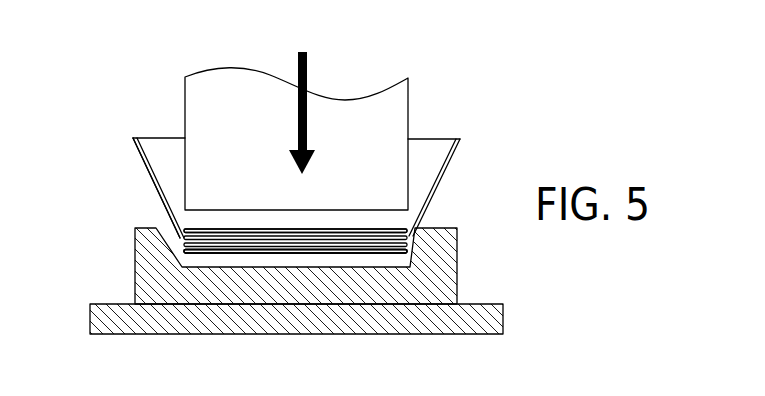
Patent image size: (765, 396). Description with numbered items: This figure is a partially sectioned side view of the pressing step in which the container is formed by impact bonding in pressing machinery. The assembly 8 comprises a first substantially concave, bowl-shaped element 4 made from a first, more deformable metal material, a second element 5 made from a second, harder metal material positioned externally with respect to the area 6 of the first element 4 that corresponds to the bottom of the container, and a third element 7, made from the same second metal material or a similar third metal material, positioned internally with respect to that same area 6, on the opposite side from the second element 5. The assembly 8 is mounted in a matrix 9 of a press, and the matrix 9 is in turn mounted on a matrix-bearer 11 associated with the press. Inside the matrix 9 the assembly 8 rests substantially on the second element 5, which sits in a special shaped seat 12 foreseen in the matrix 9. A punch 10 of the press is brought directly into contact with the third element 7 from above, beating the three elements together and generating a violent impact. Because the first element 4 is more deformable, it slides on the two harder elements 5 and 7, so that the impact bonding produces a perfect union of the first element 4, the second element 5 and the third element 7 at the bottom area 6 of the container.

The first element 4 is at (145, 164).
The second element 5 is at (234, 256).
The area 6 is at (405, 239).
The third element 7 is at (246, 229).
The assembly 8 is at (137, 188).
The matrix 9 is at (135, 267).
The punch 10 is at (382, 123).
The matrix-bearer 11 is at (505, 325).
The shaped seat 12 is at (325, 262).